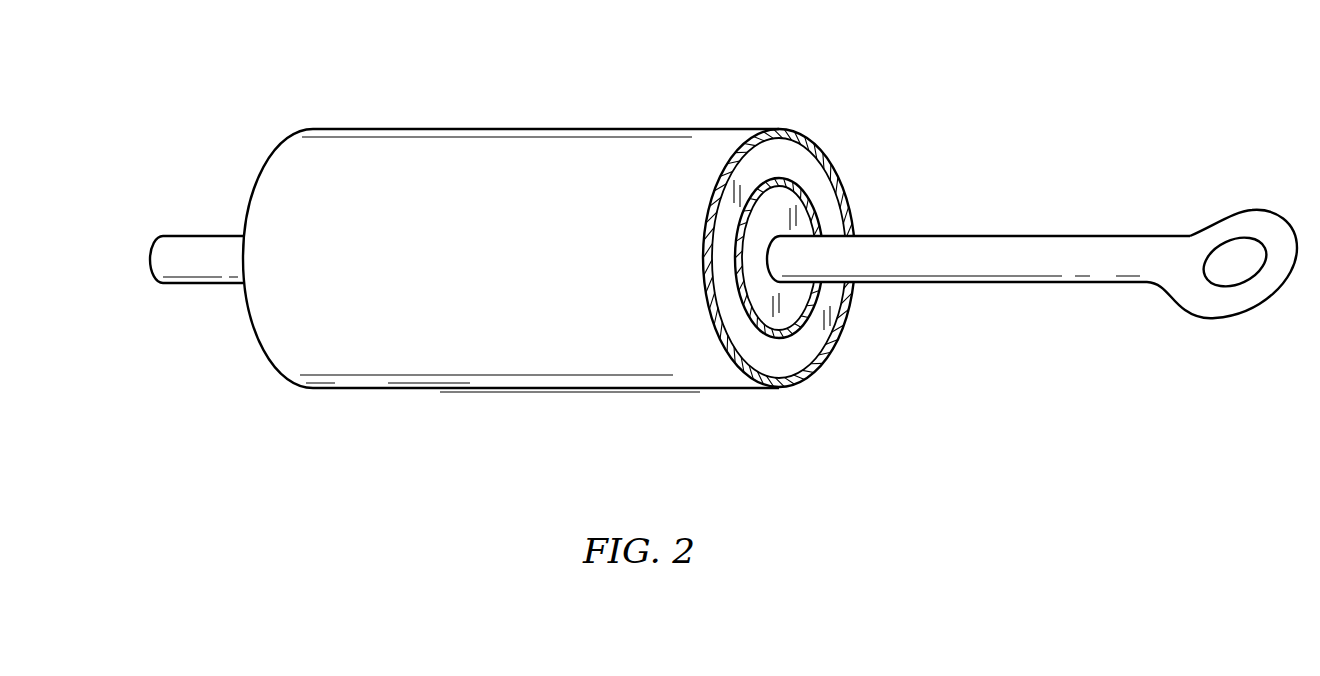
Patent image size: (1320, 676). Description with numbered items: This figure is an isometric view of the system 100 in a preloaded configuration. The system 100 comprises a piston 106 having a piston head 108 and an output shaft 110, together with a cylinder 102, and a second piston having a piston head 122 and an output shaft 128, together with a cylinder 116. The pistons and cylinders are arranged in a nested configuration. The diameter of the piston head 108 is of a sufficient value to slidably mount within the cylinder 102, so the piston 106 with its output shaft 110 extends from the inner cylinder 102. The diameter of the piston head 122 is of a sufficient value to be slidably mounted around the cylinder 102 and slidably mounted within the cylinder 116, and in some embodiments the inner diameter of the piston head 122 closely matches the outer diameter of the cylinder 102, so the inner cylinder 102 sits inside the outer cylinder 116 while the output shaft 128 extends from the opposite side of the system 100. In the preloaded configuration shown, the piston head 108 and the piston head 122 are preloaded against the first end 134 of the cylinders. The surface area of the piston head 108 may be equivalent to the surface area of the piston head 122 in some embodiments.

The system 100 is at (455, 409).
The cylinder 102 is at (778, 347).
The piston 106 is at (942, 233).
The piston head 108 is at (777, 216).
The output shaft 110 is at (1155, 233).
The cylinder 116 is at (847, 331).
The piston head 122 is at (748, 346).
The output shaft 128 is at (182, 282).
The first end 134 is at (827, 381).